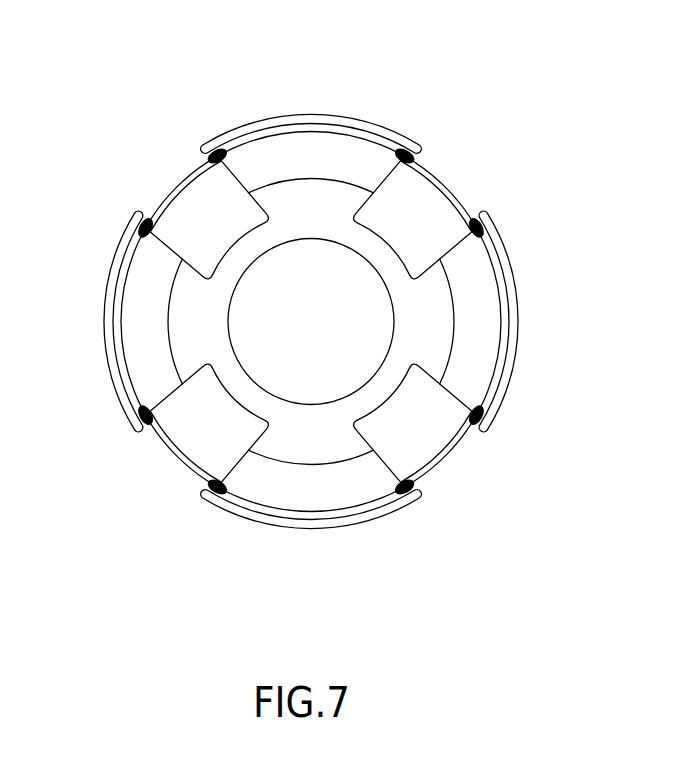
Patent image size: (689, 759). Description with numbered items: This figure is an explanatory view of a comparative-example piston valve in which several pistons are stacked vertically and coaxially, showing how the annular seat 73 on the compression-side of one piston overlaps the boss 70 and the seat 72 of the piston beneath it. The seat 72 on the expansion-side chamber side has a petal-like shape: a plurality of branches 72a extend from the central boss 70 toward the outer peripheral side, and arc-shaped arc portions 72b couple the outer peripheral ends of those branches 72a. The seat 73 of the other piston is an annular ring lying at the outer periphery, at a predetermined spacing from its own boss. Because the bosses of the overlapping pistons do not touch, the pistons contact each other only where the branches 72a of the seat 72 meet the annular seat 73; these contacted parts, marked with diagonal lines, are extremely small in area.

The boss 70 is at (246, 262).
The seat 72 is at (401, 114).
The branches 72a is at (212, 154).
The arc portions 72b is at (313, 112).
The seat 73 is at (177, 182).